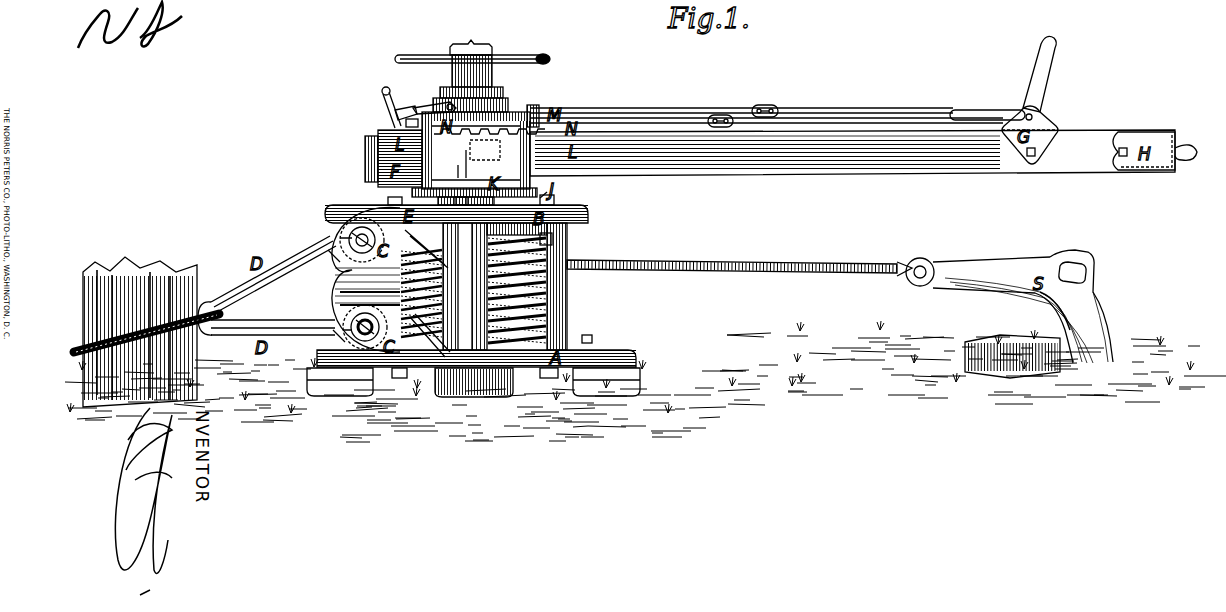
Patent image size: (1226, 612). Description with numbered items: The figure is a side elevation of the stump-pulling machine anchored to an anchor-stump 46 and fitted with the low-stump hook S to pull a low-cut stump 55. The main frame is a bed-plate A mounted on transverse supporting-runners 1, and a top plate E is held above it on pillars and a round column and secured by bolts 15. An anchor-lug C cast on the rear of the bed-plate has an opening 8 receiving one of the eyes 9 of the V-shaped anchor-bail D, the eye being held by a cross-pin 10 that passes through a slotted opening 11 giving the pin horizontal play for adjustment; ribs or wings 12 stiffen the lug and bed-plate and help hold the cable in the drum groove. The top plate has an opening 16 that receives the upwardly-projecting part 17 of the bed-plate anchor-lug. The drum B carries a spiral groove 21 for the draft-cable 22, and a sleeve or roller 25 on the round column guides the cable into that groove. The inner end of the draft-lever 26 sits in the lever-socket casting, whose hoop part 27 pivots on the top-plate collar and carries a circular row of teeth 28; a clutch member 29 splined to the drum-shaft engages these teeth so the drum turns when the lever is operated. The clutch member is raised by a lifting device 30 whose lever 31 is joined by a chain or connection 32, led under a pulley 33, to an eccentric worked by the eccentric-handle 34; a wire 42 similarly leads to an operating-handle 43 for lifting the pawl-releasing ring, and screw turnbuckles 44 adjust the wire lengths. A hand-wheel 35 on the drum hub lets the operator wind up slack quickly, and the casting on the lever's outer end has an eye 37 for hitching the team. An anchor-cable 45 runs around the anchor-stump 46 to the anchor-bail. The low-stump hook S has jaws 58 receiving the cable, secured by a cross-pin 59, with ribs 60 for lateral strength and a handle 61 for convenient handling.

The transverse supporting-runners 1 is at (473, 364).
The opening in anchor-lug 8 is at (345, 318).
The eyes of anchor-bail 9 is at (341, 272).
The cross-pin 10 is at (372, 282).
The slotted opening 11 is at (388, 248).
The ribs or wings 12 is at (427, 293).
The bolts 15 is at (475, 382).
The opening in top plate 16 is at (340, 292).
The upwardly-projecting part 17 is at (340, 305).
The spiral groove 21 is at (548, 240).
The draft-cable 22 is at (739, 259).
The sleeve or roller 25 is at (465, 286).
The draft-lever 26 is at (366, 160).
The hoop part of draft-lever socket 27 is at (476, 150).
The circular row of teeth 28 is at (498, 143).
The clutch member 29 is at (489, 127).
The lifting device 30 is at (447, 104).
The lever of lifting device 31 is at (382, 93).
The chain or connection 32 is at (390, 109).
The pulley 33 is at (400, 124).
The eccentric-handle 34 is at (995, 114).
The hand-wheel 35 is at (548, 59).
The eye 37 is at (1195, 150).
The wire 42 is at (741, 100).
The operating-handle 43 is at (1042, 84).
The screw turnbuckles 44 is at (765, 105).
The anchor-cable 45 is at (146, 344).
The anchor-stump 46 is at (140, 332).
The low-cut stump 55 is at (998, 346).
The jaws of hook 58 is at (920, 261).
The cross-pin 59 is at (923, 271).
The ribs 60 is at (1069, 302).
The handle 61 is at (1079, 265).